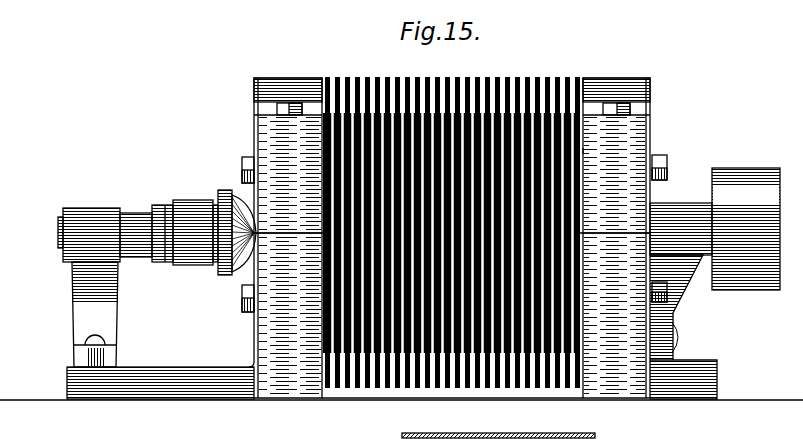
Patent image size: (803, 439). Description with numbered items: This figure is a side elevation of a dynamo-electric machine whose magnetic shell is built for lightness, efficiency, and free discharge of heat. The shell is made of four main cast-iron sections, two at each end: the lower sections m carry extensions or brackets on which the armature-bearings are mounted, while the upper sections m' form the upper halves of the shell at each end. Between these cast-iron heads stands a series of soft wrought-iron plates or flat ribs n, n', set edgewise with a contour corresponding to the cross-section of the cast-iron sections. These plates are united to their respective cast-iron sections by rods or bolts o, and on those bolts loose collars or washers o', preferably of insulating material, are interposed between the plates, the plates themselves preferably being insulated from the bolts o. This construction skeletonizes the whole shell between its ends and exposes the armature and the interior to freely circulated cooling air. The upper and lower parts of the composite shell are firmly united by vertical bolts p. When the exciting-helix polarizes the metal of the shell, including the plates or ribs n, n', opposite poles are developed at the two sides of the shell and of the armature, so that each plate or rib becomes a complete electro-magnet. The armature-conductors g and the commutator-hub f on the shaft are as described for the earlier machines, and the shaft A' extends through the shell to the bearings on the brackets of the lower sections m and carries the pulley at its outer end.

The vertical bolts p is at (288, 103).
The soft wrought-iron plates or flat ribs n' is at (451, 203).
The soft wrought-iron plates or flat ribs n is at (450, 388).
The loose collars or washers o' is at (633, 131).
The upper sections m' is at (452, 155).
The lower sections m is at (449, 315).
The rods or bolts o is at (458, 289).
The commutator-hub f is at (198, 202).
The armature shaft A' is at (354, 233).
The armature-conductors g is at (755, 229).